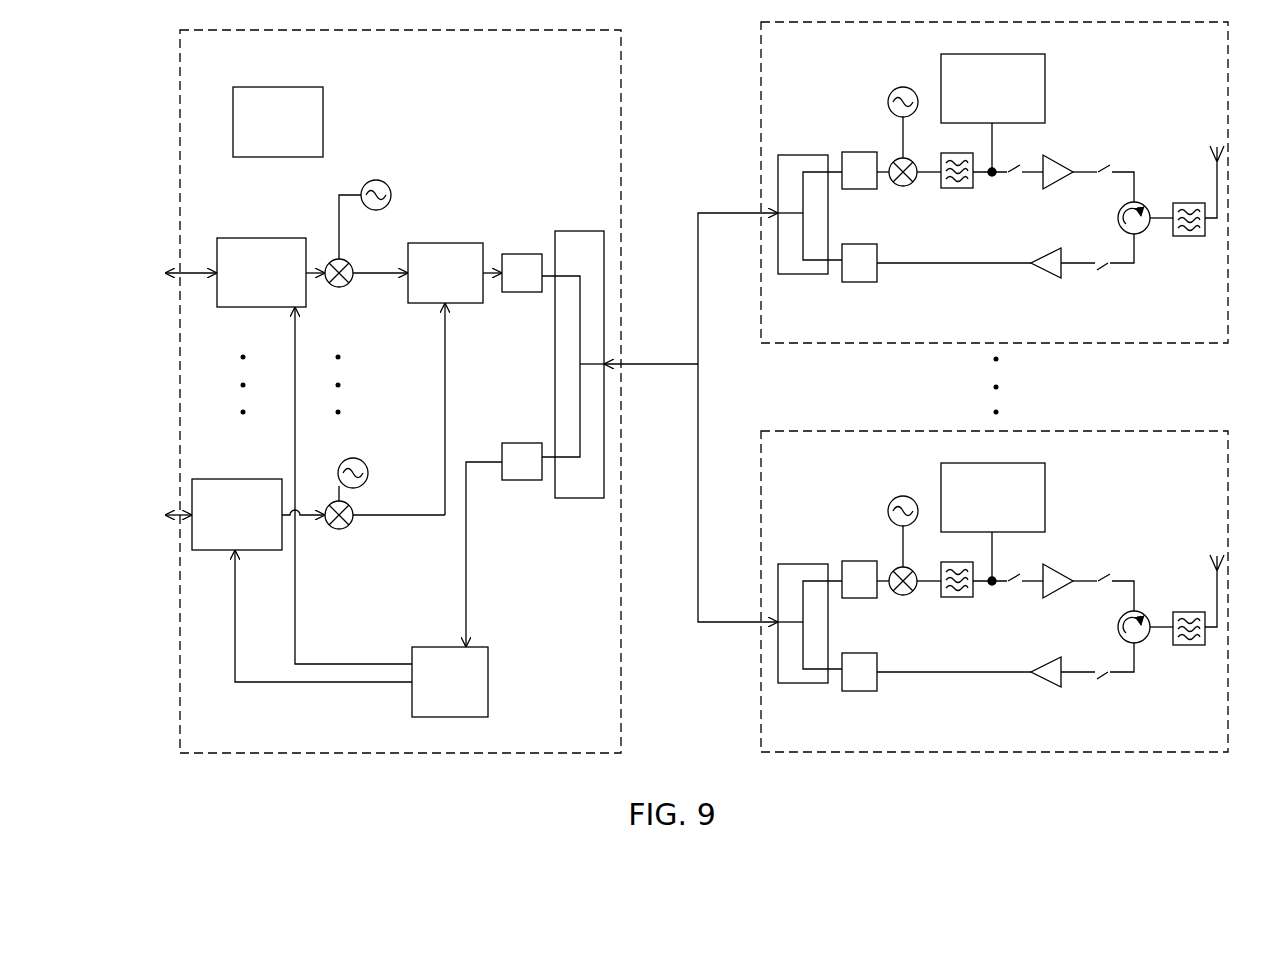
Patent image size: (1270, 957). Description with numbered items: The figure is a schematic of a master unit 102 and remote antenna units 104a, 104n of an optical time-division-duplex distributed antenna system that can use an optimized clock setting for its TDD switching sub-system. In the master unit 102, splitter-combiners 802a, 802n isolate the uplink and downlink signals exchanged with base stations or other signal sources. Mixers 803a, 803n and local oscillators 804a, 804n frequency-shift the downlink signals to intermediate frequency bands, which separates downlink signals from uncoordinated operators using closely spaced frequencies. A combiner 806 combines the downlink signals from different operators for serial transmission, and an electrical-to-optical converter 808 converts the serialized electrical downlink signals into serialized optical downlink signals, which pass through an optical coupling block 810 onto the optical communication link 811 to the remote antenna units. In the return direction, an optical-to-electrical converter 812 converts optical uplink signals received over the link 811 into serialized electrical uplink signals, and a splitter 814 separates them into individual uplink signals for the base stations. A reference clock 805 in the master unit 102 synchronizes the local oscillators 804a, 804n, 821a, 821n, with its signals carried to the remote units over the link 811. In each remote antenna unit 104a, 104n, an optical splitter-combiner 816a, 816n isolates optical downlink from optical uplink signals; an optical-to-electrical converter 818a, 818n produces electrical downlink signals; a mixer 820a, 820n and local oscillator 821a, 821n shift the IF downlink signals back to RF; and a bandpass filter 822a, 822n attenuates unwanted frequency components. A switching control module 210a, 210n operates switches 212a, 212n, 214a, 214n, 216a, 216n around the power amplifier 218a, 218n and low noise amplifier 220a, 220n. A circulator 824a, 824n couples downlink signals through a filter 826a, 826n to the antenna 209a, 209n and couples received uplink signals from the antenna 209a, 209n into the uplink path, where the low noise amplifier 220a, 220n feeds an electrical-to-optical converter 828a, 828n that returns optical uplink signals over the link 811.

The master unit 102 is at (443, 391).
The remote antenna unit 104a is at (994, 182).
The remote antenna unit 104n is at (994, 591).
The reference clock 805 is at (278, 122).
The splitter-combiner 802a is at (261, 272).
The splitter-combiner 802n is at (237, 514).
The mixer 803a is at (338, 290).
The mixer 803n is at (342, 532).
The local oscillator 804a is at (393, 193).
The local oscillator 804n is at (368, 456).
The combiner 806 is at (445, 273).
The electrical-to-optical converter 808 is at (522, 251).
The optical multiplexer 810 is at (573, 228).
The optical communication link 811 is at (663, 360).
The optical-to-electrical converter 812 is at (528, 483).
The splitter 814 is at (450, 682).
The optical splitter-combiner 816a is at (813, 151).
The optical splitter-combiner 816n is at (810, 602).
The optical-to-electrical converter 818a is at (868, 150).
The optical-to-electrical converter 818n is at (861, 558).
The mixer 820a is at (911, 188).
The mixer 820n is at (903, 601).
The local oscillator 821a is at (893, 89).
The local oscillator 821n is at (879, 518).
The bandpass filter 822a is at (968, 191).
The bandpass filter 822n is at (960, 601).
The switching control module 210a is at (993, 115).
The switching control module 210n is at (993, 524).
The switch 212a is at (1017, 177).
The switch 212n is at (1012, 598).
The power amplifier 218a is at (1056, 188).
The power amplifier 218n is at (1053, 599).
The switch 214a is at (1103, 180).
The switch 214n is at (1097, 600).
The circulator 824a is at (1145, 197).
The circulator 824n is at (1150, 606).
The filter 826a is at (1175, 243).
The filter 826n is at (1186, 653).
The antenna 209a is at (1214, 135).
The antenna 209n is at (1188, 575).
The switch 216a is at (1100, 276).
The switch 216n is at (1107, 699).
The low noise amplifier 220a is at (1045, 283).
The low noise amplifier 220n is at (1053, 700).
The electrical-to-optical converter 828a is at (860, 285).
The electrical-to-optical converter 828n is at (866, 696).